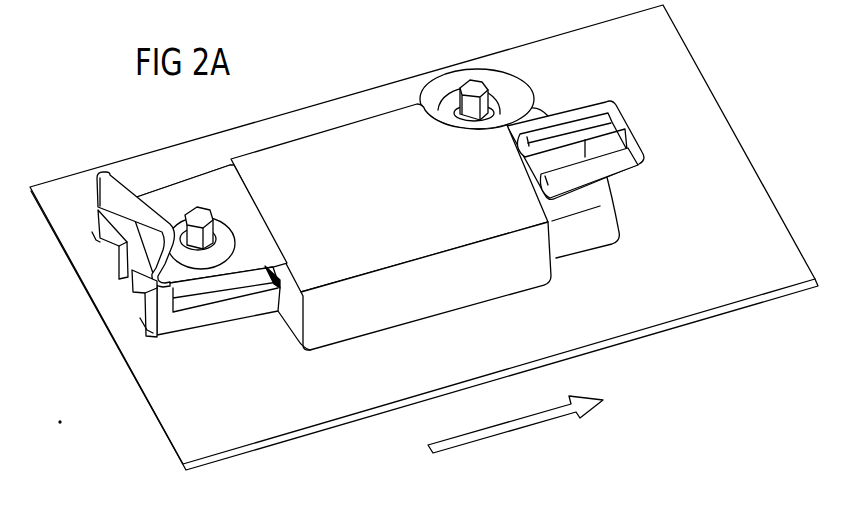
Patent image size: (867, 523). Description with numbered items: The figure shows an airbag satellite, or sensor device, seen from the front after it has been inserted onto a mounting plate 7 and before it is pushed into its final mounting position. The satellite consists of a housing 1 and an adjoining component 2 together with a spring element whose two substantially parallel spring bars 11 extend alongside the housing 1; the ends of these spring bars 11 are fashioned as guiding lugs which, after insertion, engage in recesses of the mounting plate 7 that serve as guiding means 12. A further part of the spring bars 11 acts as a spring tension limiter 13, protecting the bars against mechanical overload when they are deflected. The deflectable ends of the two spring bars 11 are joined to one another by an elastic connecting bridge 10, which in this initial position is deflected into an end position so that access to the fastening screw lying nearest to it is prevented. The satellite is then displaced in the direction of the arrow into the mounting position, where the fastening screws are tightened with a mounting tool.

The housing 1 is at (423, 303).
The plug connector 2 is at (597, 232).
The mounting plate 7 is at (723, 152).
The connecting bridge 10 is at (122, 196).
The spring bars 11 is at (185, 188).
The guiding means 12 is at (97, 232).
The spring tension limiter 13 is at (132, 300).